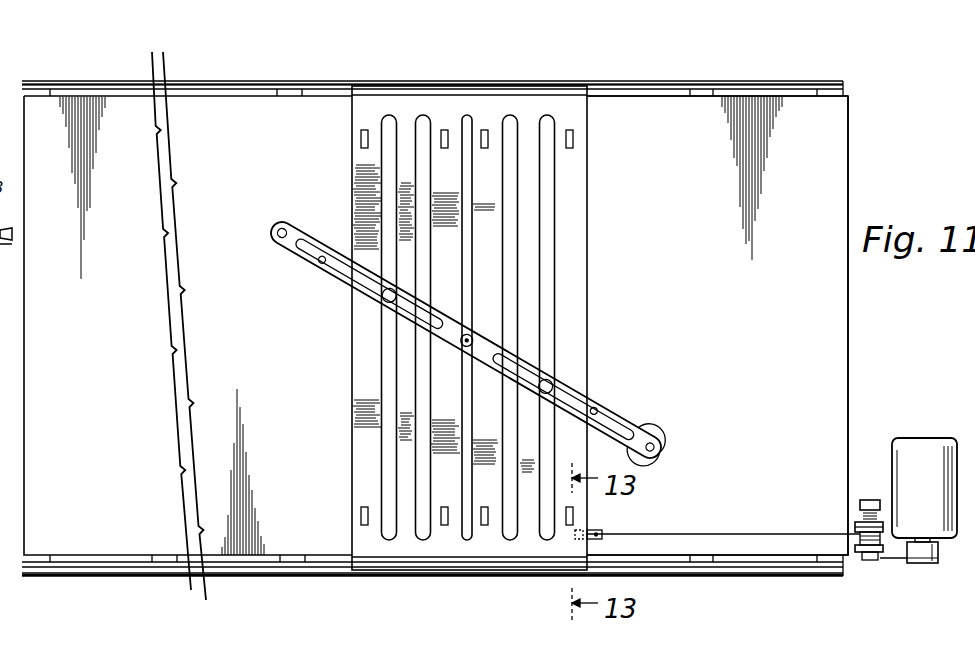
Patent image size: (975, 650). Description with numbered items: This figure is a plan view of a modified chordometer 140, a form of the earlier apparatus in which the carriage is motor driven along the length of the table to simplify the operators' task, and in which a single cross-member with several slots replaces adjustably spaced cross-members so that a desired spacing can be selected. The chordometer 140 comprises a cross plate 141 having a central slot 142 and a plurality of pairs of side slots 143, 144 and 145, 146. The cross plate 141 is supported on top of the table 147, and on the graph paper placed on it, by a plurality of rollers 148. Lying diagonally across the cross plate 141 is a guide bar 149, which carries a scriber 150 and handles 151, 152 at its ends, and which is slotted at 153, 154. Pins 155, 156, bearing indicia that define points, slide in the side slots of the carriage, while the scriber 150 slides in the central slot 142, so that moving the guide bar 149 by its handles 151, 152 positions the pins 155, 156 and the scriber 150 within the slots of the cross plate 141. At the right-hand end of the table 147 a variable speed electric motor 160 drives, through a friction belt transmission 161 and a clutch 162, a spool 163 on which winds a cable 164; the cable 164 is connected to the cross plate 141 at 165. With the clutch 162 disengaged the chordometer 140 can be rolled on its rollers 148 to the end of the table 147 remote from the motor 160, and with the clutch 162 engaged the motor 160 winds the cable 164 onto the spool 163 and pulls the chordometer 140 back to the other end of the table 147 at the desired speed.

The chordometer 140 is at (473, 66).
The cross plate 141 is at (582, 196).
The central slot 142 is at (467, 114).
The side slot 143 is at (511, 114).
The side slot 144 is at (423, 114).
The side slot 145 is at (548, 114).
The side slot 146 is at (389, 114).
The table 147 is at (838, 334).
The roller 148 is at (588, 511).
The guide bar 149 is at (640, 430).
The scriber 150 is at (463, 348).
The handle 151 is at (280, 246).
The handle 152 is at (655, 440).
The slot 153 is at (318, 270).
The slot 154 is at (600, 410).
The pin 155 is at (380, 300).
The pin 156 is at (585, 358).
The variable speed electric motor 160 is at (928, 438).
The friction belt transmission 161 is at (900, 562).
The clutch 162 is at (867, 498).
The spool 163 is at (861, 550).
The cable 164 is at (748, 533).
The connection point 165 is at (592, 533).